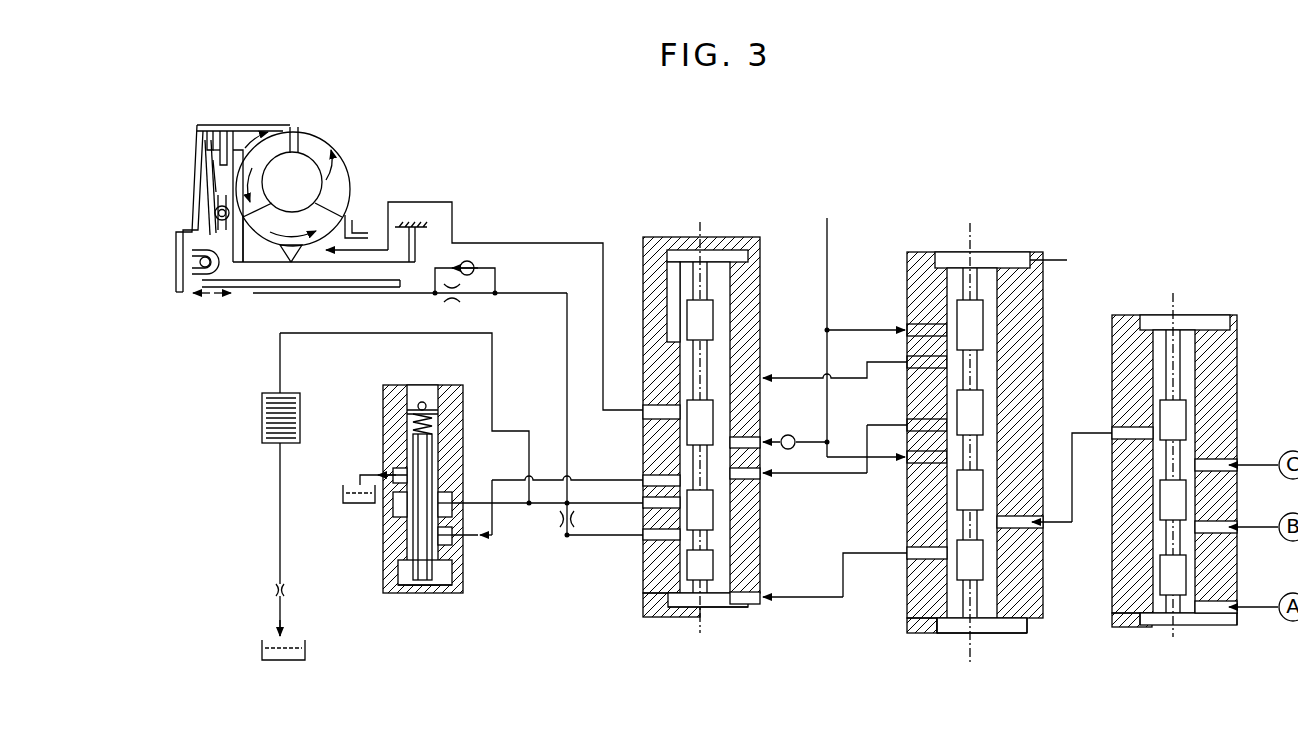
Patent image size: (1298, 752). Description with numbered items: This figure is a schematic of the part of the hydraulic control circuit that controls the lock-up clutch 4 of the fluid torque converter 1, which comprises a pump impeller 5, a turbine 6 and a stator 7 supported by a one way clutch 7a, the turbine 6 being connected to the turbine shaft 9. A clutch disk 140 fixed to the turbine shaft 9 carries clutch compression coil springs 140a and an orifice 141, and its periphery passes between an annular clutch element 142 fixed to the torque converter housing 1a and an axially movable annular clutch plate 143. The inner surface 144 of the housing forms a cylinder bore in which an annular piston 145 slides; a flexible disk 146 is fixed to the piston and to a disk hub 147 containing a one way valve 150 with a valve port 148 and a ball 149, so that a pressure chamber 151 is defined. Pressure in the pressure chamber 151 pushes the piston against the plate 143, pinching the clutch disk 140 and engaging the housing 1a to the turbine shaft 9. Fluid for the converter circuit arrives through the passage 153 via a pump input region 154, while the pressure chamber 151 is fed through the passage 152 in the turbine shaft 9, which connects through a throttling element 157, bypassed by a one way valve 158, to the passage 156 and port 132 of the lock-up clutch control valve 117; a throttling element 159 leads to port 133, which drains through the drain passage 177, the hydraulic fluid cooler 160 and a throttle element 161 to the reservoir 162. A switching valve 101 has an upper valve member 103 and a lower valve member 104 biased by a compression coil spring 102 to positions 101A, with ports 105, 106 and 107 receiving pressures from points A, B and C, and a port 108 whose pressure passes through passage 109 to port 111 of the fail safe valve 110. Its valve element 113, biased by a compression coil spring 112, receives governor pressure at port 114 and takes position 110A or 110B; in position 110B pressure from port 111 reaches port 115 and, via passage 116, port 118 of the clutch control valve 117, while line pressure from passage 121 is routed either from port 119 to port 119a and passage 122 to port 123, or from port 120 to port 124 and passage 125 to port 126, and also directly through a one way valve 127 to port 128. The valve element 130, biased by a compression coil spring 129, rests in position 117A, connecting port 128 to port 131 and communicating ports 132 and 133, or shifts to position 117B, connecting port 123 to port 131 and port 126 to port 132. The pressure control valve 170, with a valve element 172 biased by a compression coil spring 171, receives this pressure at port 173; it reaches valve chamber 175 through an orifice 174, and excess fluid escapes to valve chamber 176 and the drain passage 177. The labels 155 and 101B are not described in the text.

The fluid torque converter 1 is at (306, 164).
The torque converter housing 1a is at (284, 127).
The lock-up clutch 4 is at (208, 114).
The pump impeller 5 is at (345, 172).
The turbine 6 is at (288, 136).
The stator 7 is at (292, 216).
The one way clutch 7a is at (300, 256).
The turbine shaft 9 is at (262, 288).
The clutch disk 140 is at (228, 270).
The clutch compression coil springs 140a is at (214, 222).
The orifice 141 is at (217, 178).
The annular clutch element 142 is at (247, 130).
The annular clutch plate 143 is at (227, 130).
The inner surface 144 is at (198, 128).
The annular piston 145 is at (206, 140).
The flexible disk 146 is at (213, 215).
The disk hub 147 is at (192, 258).
The valve port 148 is at (213, 296).
The ball 149 is at (198, 272).
The one way valve 150 is at (196, 264).
The pressure chamber 151 is at (202, 182).
The passage 152 is at (292, 295).
The passage 153 is at (436, 202).
The pump input region 154 is at (344, 241).
The passage 155 is at (210, 200).
The passage 156 is at (567, 352).
The throttling element 157 is at (455, 300).
The one way valve 158 is at (475, 268).
The throttling element 159 is at (563, 524).
The hydraulic fluid cooler 160 is at (262, 414).
The throttle element 161 is at (274, 590).
The reservoir 162 is at (306, 651).
The lock-up clutch hydraulic fluid pressure control valve 170 is at (418, 383).
The compression coil spring 171 is at (406, 428).
The valve element 172 is at (410, 500).
The port 173 is at (448, 538).
The orifice 174 is at (418, 578).
The valve chamber 175 is at (440, 590).
The valve chamber 176 is at (442, 497).
The drain passage 177 is at (493, 381).
The lock-up clutch control valve 117 is at (706, 228).
The downwardly biased position 117A is at (680, 614).
The upward position 117B is at (712, 612).
The port 118 is at (745, 601).
The port 123 is at (742, 380).
The port 126 is at (752, 480).
The one way valve 127 is at (790, 435).
The port 128 is at (742, 430).
The compression coil spring 129 is at (724, 306).
The valve element 130 is at (722, 342).
The port 131 is at (650, 418).
The port 132 is at (650, 500).
The port 133 is at (648, 545).
The passage 121 is at (838, 250).
The passage 122 is at (840, 380).
The passage 125 is at (850, 476).
The fail safe valve 110 is at (976, 224).
The upwardly biased position 110A is at (952, 650).
The downwardly biased position 110B is at (992, 650).
The port 111 is at (1015, 514).
The compression coil spring 112 is at (937, 628).
The valve element 113 is at (994, 312).
The port 114 is at (1010, 253).
The port 115 is at (912, 557).
The passage 116 is at (843, 600).
The port 119 is at (920, 318).
The port 119a is at (902, 365).
The port 120 is at (906, 466).
The port 124 is at (906, 428).
The switching valve 101 is at (1178, 305).
The downwardly biased positions 101A is at (1158, 626).
The valve end chamber 101B is at (1192, 626).
The compression coil spring 102 is at (1196, 372).
The upper valve member 103 is at (1196, 417).
The lower valve member 104 is at (1216, 550).
The port 105 is at (1222, 602).
The port 106 is at (1220, 522).
The port 107 is at (1215, 462).
The port 108 is at (1118, 440).
The passage 109 is at (1068, 525).